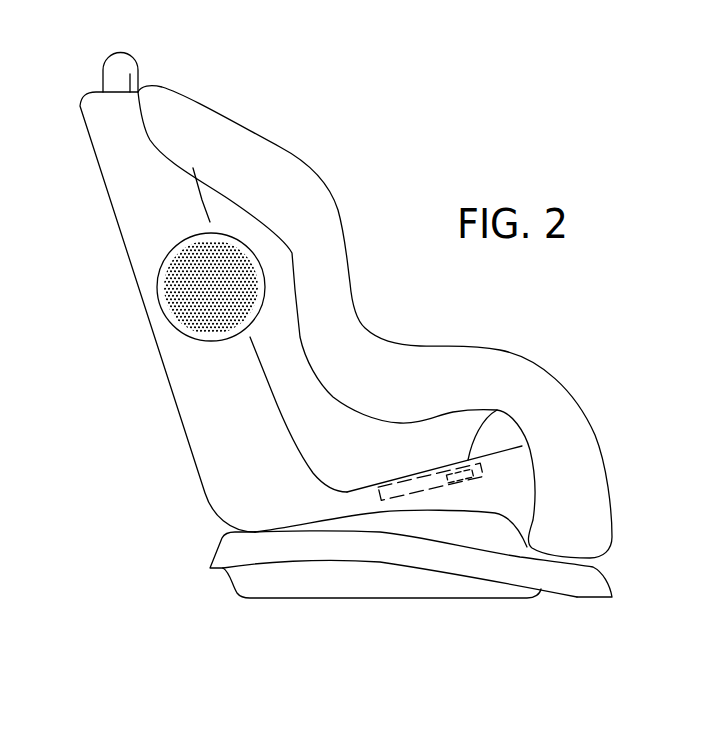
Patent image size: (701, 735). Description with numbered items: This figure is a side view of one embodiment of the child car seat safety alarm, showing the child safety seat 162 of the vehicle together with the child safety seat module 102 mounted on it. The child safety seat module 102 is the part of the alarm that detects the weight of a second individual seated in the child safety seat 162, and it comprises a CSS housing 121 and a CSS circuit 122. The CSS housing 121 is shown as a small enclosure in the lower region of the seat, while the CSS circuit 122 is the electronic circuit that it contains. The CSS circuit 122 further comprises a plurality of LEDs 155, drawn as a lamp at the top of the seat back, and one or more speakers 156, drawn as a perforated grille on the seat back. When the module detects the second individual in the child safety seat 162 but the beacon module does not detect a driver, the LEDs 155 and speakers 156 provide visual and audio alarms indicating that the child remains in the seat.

The child safety seat module 102 is at (420, 505).
The CSS housing 121 is at (433, 492).
The CSS circuit 122 is at (466, 468).
The plurality of LEDs 155 is at (121, 68).
The speakers 156 is at (213, 288).
The child safety seat 162 is at (405, 345).